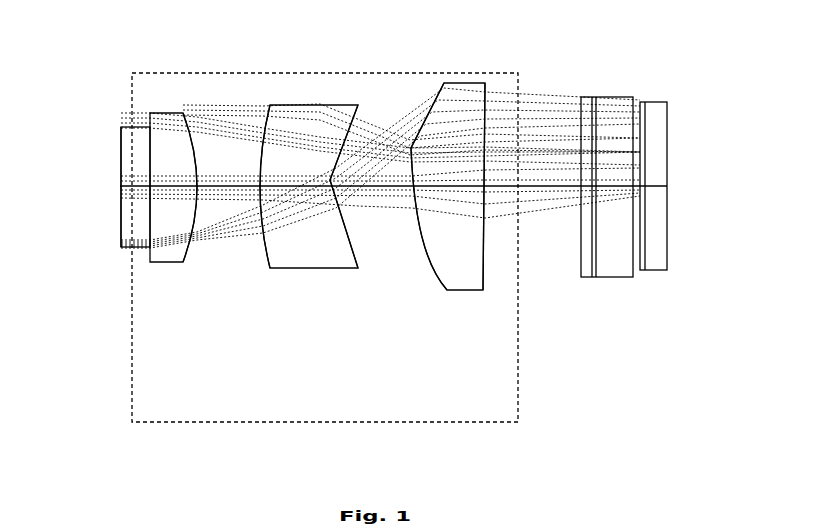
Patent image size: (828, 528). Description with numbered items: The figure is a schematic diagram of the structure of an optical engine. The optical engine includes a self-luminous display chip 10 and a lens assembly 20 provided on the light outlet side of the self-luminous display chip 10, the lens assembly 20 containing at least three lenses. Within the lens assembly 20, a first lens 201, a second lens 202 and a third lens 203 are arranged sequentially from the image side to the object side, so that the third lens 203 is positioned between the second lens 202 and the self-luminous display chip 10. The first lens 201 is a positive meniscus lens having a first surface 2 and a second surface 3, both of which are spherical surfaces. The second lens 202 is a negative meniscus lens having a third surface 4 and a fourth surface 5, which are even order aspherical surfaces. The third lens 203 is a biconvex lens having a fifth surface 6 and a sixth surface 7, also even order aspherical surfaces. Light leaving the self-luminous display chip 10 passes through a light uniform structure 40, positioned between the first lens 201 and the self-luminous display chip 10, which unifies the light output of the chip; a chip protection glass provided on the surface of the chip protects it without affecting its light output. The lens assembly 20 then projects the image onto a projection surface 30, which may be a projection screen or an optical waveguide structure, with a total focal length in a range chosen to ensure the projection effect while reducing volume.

The first surface 2 is at (150, 172).
The second surface 3 is at (180, 113).
The third surface 4 is at (263, 137).
The fourth surface 5 is at (330, 180).
The fifth surface 6 is at (411, 148).
The sixth surface 7 is at (485, 83).
The projection surface 30 is at (118, 227).
The first lens 201 is at (172, 230).
The second lens 202 is at (295, 238).
The third lens 203 is at (460, 260).
The lens assembly 20 is at (518, 373).
The light uniform structure 40 is at (617, 252).
The self-luminous display chip 10 is at (660, 262).